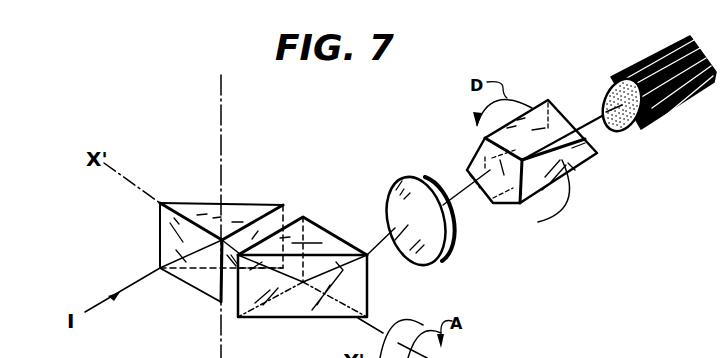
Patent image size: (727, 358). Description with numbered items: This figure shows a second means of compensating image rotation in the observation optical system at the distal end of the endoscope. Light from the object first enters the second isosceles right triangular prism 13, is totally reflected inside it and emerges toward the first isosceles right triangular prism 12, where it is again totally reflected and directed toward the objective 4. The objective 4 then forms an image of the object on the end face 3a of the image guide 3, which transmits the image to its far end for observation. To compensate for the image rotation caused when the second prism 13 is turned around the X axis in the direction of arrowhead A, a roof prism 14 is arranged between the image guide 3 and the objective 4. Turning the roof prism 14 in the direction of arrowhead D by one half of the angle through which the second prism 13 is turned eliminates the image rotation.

The second isosceles right triangular prism 13 is at (197, 291).
The first isosceles right triangular prism 12 is at (292, 317).
The objective 4 is at (450, 228).
The roof prism 14 is at (482, 139).
The image guide 3 is at (680, 107).
The end face of the image guide 3a is at (618, 133).